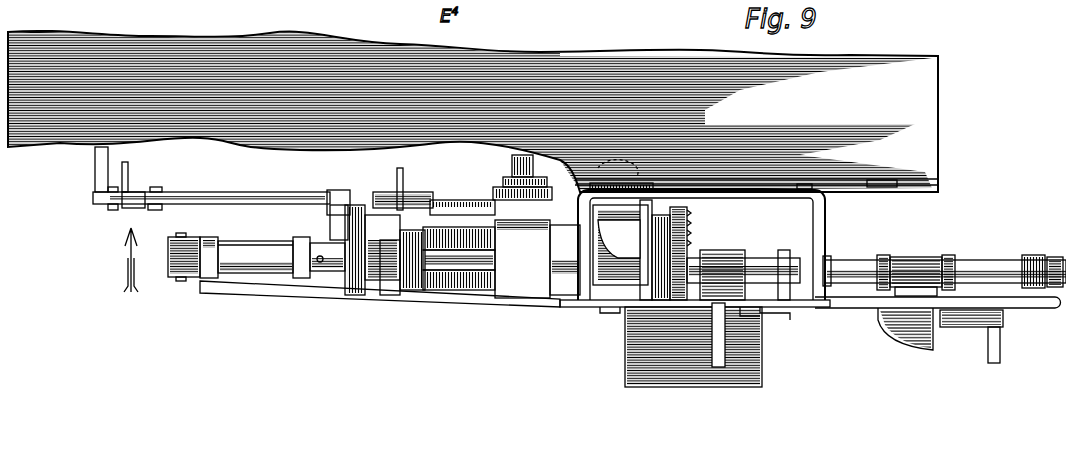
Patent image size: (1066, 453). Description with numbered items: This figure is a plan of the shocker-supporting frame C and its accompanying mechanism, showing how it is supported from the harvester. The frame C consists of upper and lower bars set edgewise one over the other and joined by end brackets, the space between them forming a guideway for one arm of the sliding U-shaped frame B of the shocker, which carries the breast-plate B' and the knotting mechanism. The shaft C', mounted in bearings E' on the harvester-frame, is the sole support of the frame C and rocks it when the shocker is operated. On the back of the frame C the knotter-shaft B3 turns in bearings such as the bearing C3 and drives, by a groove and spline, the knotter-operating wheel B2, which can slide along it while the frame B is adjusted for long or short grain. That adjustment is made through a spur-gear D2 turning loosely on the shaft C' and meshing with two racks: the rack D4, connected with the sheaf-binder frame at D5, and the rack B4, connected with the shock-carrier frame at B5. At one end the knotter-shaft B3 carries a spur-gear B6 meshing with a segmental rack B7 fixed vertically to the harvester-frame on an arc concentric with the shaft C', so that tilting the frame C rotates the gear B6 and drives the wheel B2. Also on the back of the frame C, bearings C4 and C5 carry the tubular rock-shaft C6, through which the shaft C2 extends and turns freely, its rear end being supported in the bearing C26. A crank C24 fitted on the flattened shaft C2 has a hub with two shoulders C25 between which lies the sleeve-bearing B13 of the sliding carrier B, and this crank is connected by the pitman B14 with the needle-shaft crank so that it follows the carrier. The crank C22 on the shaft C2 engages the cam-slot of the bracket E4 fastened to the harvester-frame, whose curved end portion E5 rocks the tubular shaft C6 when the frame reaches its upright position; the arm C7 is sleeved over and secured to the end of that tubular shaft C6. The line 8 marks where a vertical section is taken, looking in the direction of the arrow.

The section line 8 is at (167, 256).
The shocker-supporting frame C is at (630, 253).
The shaft C' is at (523, 239).
The shaft C2 is at (391, 268).
The bearing C3 is at (830, 260).
The bearing C4 is at (211, 236).
The bearing C5 is at (302, 237).
The tubular rock-shaft C6 is at (243, 252).
The arm C7 is at (193, 280).
The crank C22 is at (330, 240).
The crank C24 is at (968, 328).
The shoulders C25 is at (884, 256).
The bearing C26 is at (1038, 248).
The spur-gear D2 is at (490, 197).
The rack D4 is at (462, 215).
The connection point D5 is at (377, 207).
The bearings E' is at (479, 241).
The bracket E4 is at (477, 292).
The curved end portion E5 is at (621, 209).
The sliding U-shaped frame B is at (738, 284).
The breast-plate B' is at (705, 360).
The knotter-operating wheel B2 is at (688, 228).
The knotter-shaft B3 is at (768, 262).
The rack B4 is at (620, 213).
The connection point B5 is at (659, 217).
The spur-gear B6 is at (412, 270).
The segmental rack B7 is at (404, 197).
The sleeve-bearing B13 is at (915, 272).
The pitman B14 is at (1000, 355).